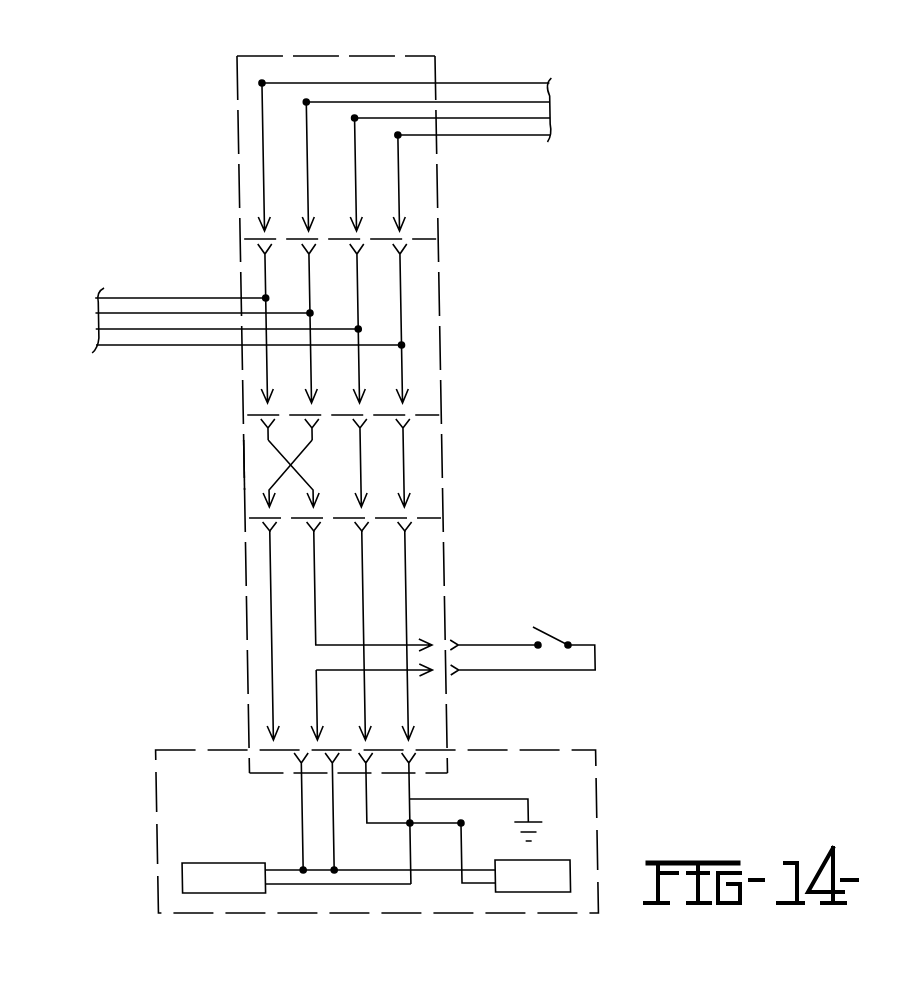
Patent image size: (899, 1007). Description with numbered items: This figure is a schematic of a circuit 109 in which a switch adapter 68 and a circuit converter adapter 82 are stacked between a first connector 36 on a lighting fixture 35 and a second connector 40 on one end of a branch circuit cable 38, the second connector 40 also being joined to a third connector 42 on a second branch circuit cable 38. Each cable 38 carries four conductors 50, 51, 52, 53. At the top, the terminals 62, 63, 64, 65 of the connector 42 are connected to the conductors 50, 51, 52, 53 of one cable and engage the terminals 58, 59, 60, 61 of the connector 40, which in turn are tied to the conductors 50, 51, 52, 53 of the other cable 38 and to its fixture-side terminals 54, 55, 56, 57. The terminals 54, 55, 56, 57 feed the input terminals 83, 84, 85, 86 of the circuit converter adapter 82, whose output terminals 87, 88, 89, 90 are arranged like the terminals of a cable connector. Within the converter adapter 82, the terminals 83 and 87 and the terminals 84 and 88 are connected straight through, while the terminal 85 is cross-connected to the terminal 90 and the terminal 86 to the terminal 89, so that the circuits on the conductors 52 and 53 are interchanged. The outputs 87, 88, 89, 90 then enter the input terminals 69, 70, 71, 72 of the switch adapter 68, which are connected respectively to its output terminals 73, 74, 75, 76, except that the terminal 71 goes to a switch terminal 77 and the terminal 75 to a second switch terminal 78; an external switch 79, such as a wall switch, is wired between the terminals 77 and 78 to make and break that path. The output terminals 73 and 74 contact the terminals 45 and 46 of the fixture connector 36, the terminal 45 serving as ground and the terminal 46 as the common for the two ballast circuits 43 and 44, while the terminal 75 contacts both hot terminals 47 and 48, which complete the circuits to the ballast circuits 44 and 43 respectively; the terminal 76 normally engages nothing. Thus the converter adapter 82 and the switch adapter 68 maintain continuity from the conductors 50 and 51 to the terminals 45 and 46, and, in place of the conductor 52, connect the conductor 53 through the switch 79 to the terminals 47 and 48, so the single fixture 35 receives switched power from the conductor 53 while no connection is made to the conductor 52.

The circuit 109 is at (225, 43).
The connector 42 is at (304, 54).
The connector 40 is at (437, 308).
The switch adapter 68 is at (234, 617).
The circuit converter adapter 82 is at (234, 462).
The connector 36 is at (231, 770).
The lighting fixture 35 is at (595, 764).
The branch circuit cable 38 is at (548, 66).
The conductor 50 is at (523, 137).
The conductor 51 is at (468, 120).
The conductor 52 is at (468, 100).
The conductor 53 is at (531, 52).
The terminal 62 is at (398, 227).
The terminal 63 is at (384, 200).
The terminal 64 is at (302, 226).
The terminal 65 is at (258, 226).
The terminal 58 is at (405, 251).
The terminal 59 is at (355, 254).
The terminal 60 is at (307, 254).
The terminal 61 is at (263, 254).
The terminal 54 is at (399, 402).
The terminal 55 is at (383, 380).
The terminal 56 is at (336, 380).
The terminal 57 is at (291, 380).
The input terminal 83 is at (403, 421).
The input terminal 84 is at (355, 428).
The input terminal 85 is at (308, 428).
The input terminal 86 is at (262, 418).
The output terminal 87 is at (397, 507).
The output terminal 88 is at (358, 490).
The output terminal 89 is at (314, 490).
The output terminal 90 is at (263, 505).
The input terminal 69 is at (401, 524).
The input terminal 70 is at (356, 530).
The input terminal 71 is at (309, 530).
The input terminal 72 is at (261, 523).
The output terminal 73 is at (397, 738).
The output terminal 74 is at (382, 715).
The output terminal 75 is at (336, 715).
The output terminal 76 is at (255, 738).
The switch terminal 77 is at (417, 638).
The switch terminal 78 is at (418, 672).
The external switch 79 is at (544, 631).
The terminal 45 is at (402, 760).
The terminal 46 is at (348, 756).
The terminal 47 is at (316, 762).
The terminal 48 is at (285, 762).
The ballast circuit 43 is at (225, 858).
The ballast circuit 44 is at (502, 858).